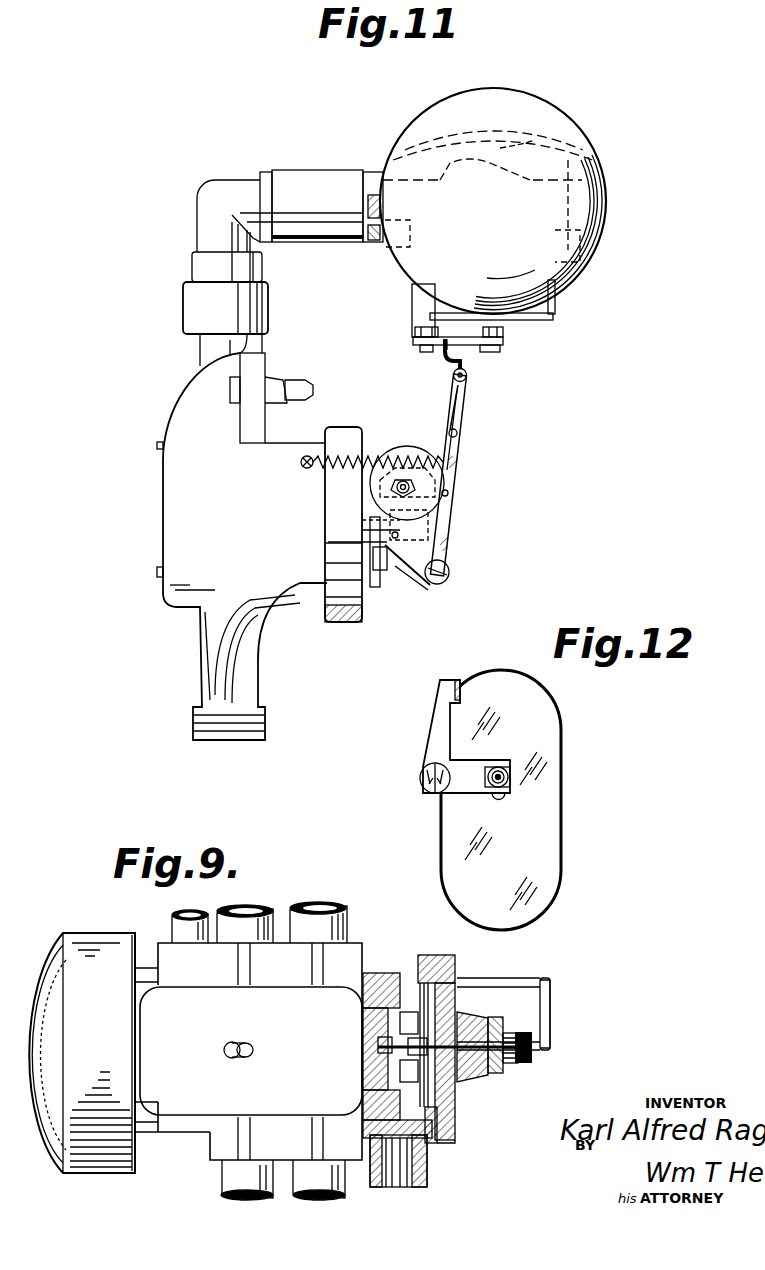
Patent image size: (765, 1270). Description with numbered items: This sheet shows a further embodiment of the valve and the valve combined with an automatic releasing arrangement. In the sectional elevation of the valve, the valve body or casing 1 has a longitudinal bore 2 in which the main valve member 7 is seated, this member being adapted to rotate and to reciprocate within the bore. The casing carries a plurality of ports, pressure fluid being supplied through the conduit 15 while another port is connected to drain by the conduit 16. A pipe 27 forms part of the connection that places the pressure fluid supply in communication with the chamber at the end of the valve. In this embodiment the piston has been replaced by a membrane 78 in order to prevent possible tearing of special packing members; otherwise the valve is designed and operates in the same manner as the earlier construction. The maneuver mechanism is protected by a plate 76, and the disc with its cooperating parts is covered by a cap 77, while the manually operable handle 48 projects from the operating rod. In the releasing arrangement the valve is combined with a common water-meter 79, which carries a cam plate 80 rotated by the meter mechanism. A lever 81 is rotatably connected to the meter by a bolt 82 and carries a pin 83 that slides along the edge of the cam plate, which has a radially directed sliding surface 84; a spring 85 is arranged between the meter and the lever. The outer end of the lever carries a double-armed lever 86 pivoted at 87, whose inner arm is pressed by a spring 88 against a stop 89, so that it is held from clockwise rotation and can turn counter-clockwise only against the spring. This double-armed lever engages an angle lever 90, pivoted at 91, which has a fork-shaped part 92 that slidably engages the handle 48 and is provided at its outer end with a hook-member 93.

In FIG. 11, the valve body 1 is at (527, 135).
In FIG. 9, the valve body 1 is at (427, 1015).
In FIG. 9, the longitudinal bore 2 is at (410, 1020).
In FIG. 9, the main valve member 7 is at (380, 980).
In FIG. 9, the conduit 15 is at (268, 909).
In FIG. 9, the conduit 16 is at (422, 1170).
In FIG. 9, the pipe 27 is at (531, 975).
In FIG. 11, the handle 48 is at (503, 330).
In FIG. 12, the handle 48 is at (512, 777).
In FIG. 9, the handle 48 is at (228, 1053).
In FIG. 11, the plate 76 is at (555, 315).
In FIG. 12, the plate 76 is at (507, 928).
In FIG. 9, the plate 76 is at (332, 1098).
In FIG. 11, the cap 77 is at (443, 100).
In FIG. 9, the cap 77 is at (47, 1140).
In FIG. 9, the membrane 78 is at (460, 997).
In FIG. 11, the water-meter 79 is at (292, 607).
In FIG. 11, the cam plate 80 is at (394, 446).
In FIG. 11, the lever 81 is at (450, 486).
In FIG. 11, the bolt 82 is at (441, 584).
In FIG. 11, the pin 83 is at (447, 496).
In FIG. 11, the sliding surface 84 is at (417, 523).
In FIG. 11, the spring 85 is at (360, 462).
In FIG. 11, the double-armed lever 86 is at (463, 362).
In FIG. 11, the pivot 87 is at (467, 380).
In FIG. 11, the spring 88 is at (462, 418).
In FIG. 11, the stop 89 is at (452, 402).
In FIG. 11, the angle lever 90 is at (480, 348).
In FIG. 12, the angle lever 90 is at (450, 723).
In FIG. 11, the pivot 91 is at (413, 342).
In FIG. 12, the pivot 91 is at (426, 789).
In FIG. 12, the fork-shaped part 92 is at (498, 762).
In FIG. 11, the hook-member 93 is at (448, 357).
In FIG. 12, the hook-member 93 is at (463, 682).